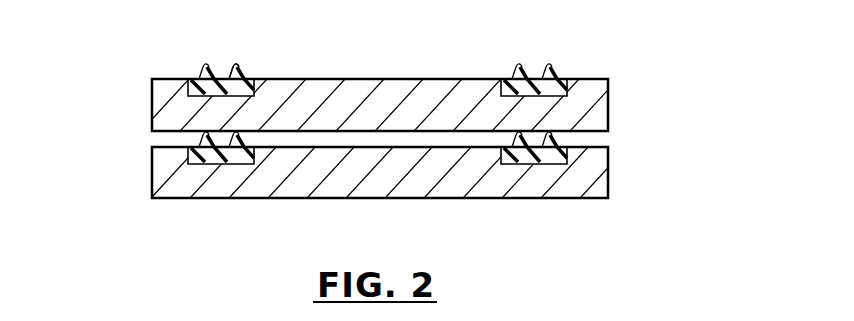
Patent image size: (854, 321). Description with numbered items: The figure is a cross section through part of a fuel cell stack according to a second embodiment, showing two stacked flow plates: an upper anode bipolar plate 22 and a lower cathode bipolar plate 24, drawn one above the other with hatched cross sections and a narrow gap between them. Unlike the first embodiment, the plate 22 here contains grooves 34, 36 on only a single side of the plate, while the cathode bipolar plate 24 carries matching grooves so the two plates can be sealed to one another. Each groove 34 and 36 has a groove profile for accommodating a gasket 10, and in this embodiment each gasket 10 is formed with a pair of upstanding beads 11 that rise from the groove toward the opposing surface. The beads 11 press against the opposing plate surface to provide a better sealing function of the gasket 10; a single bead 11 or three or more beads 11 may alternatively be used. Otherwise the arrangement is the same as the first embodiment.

The gasket 10 is at (205, 83).
The upstanding bead 11 is at (237, 67).
The anode bipolar plate 22 is at (172, 111).
The cathode bipolar plate 24 is at (578, 177).
The groove 34 is at (210, 164).
The groove 36 is at (567, 93).